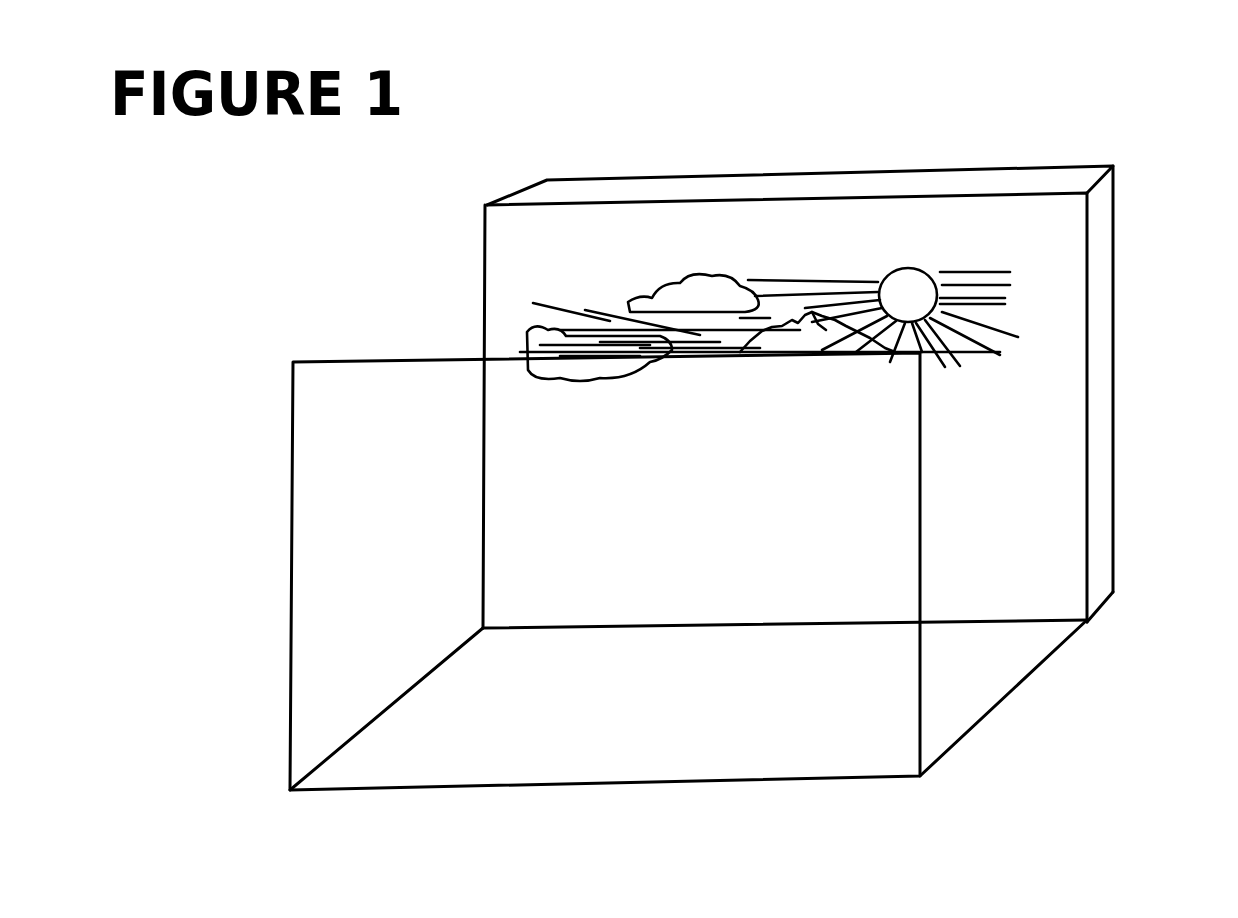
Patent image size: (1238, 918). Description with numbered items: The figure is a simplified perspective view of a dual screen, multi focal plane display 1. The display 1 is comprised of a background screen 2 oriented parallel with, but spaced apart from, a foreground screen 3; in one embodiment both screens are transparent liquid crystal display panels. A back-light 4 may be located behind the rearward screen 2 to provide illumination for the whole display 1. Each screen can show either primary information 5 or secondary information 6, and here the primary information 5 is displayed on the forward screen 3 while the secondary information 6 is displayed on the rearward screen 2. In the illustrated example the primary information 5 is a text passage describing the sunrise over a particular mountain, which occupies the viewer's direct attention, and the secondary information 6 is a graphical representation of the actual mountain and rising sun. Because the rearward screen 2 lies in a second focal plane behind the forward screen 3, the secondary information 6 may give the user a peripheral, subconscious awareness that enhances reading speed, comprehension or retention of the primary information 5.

The display 1 is at (1033, 675).
The background screen 2 is at (1075, 260).
The foreground screen 3 is at (927, 717).
The back-light 4 is at (595, 175).
The primary information 5 is at (315, 602).
The secondary information 6 is at (530, 320).